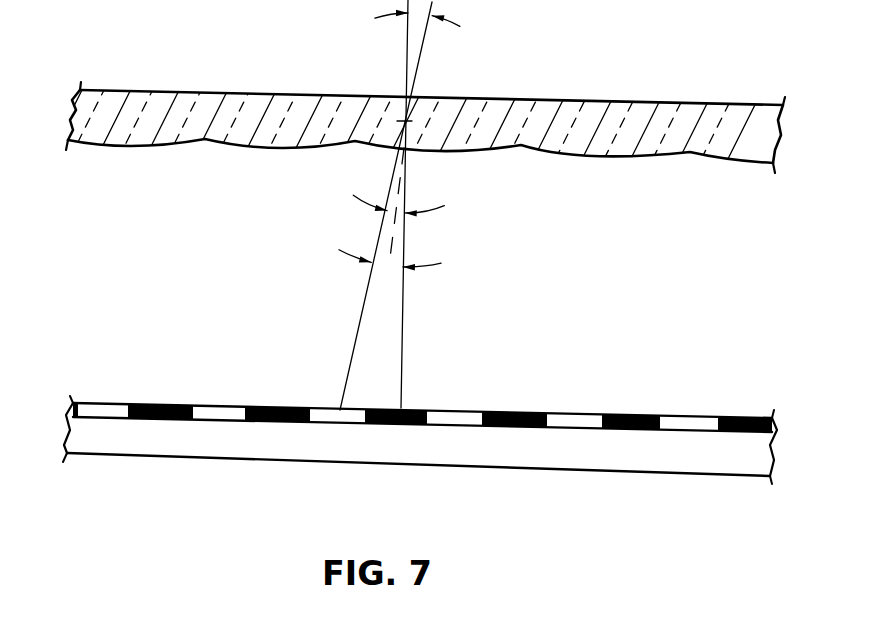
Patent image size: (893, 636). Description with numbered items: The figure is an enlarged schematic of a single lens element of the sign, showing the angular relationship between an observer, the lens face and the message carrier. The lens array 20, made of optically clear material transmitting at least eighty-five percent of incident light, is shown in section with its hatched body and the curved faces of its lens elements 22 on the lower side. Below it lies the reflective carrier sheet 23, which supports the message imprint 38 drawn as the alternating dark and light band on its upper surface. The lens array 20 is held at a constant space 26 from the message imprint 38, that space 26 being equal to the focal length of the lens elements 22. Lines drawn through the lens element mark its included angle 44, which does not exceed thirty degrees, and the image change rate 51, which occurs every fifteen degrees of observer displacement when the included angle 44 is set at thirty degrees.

The lens array 20 is at (517, 99).
The lens elements 22 is at (280, 148).
The reflective carrier sheet 23 is at (260, 462).
The space 26 is at (603, 232).
The message imprint 38 is at (513, 412).
The included angle 44 is at (403, 256).
The image change rate 51 is at (416, 113).